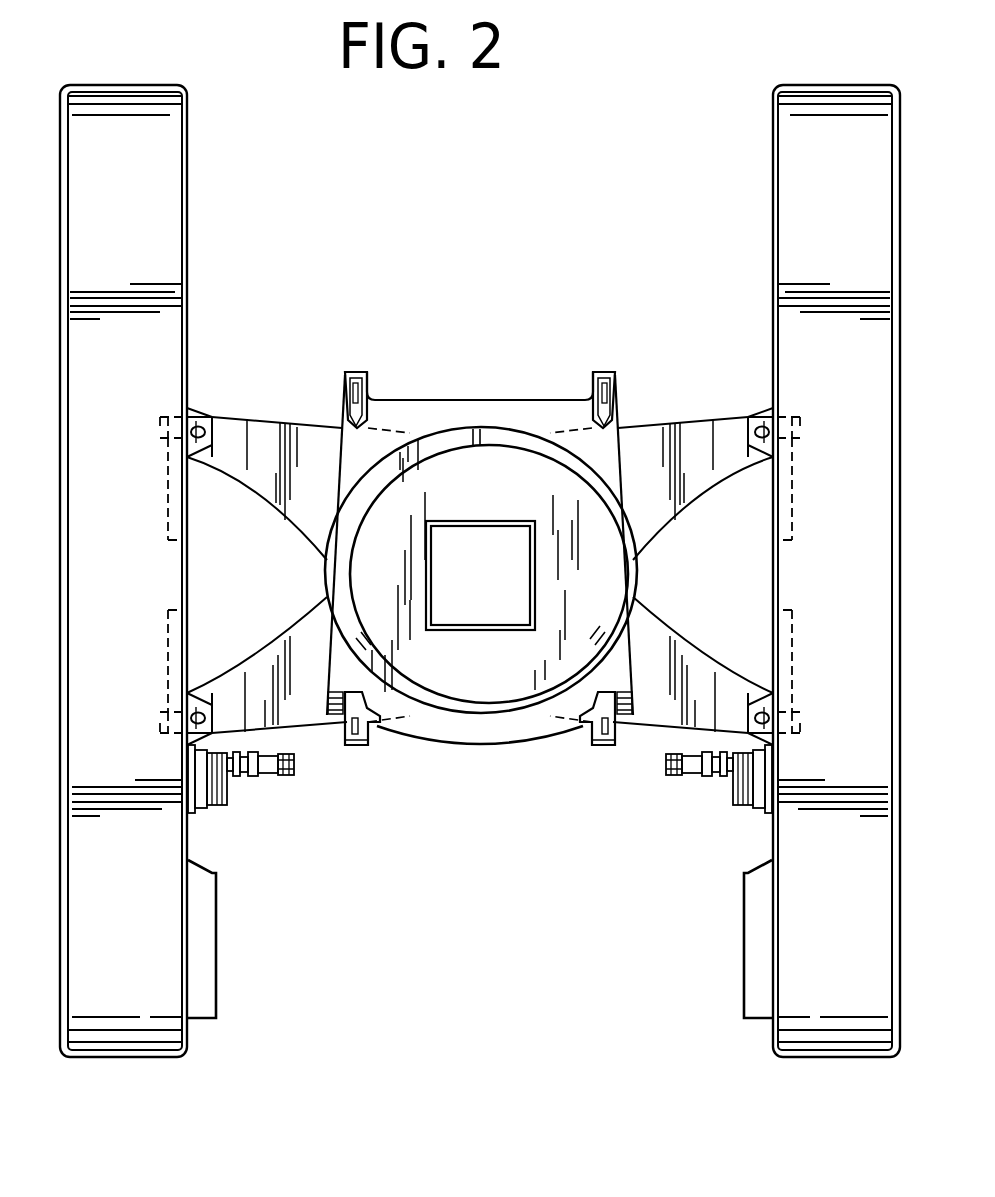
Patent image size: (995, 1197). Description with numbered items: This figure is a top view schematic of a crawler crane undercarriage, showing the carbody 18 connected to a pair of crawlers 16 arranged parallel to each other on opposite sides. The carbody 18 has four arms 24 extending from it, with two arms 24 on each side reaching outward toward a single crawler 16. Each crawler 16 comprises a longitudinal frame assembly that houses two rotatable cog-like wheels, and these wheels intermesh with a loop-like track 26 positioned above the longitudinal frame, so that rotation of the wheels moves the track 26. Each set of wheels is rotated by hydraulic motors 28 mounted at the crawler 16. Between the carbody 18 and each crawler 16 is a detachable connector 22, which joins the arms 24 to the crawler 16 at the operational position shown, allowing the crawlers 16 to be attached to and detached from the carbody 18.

The crawler 16 is at (140, 1057).
The carbody 18 is at (480, 743).
The detachable connector 22 is at (193, 408).
The arm 24 is at (302, 422).
The loop-like track 26 is at (140, 227).
The hydraulic motor 28 is at (270, 776).